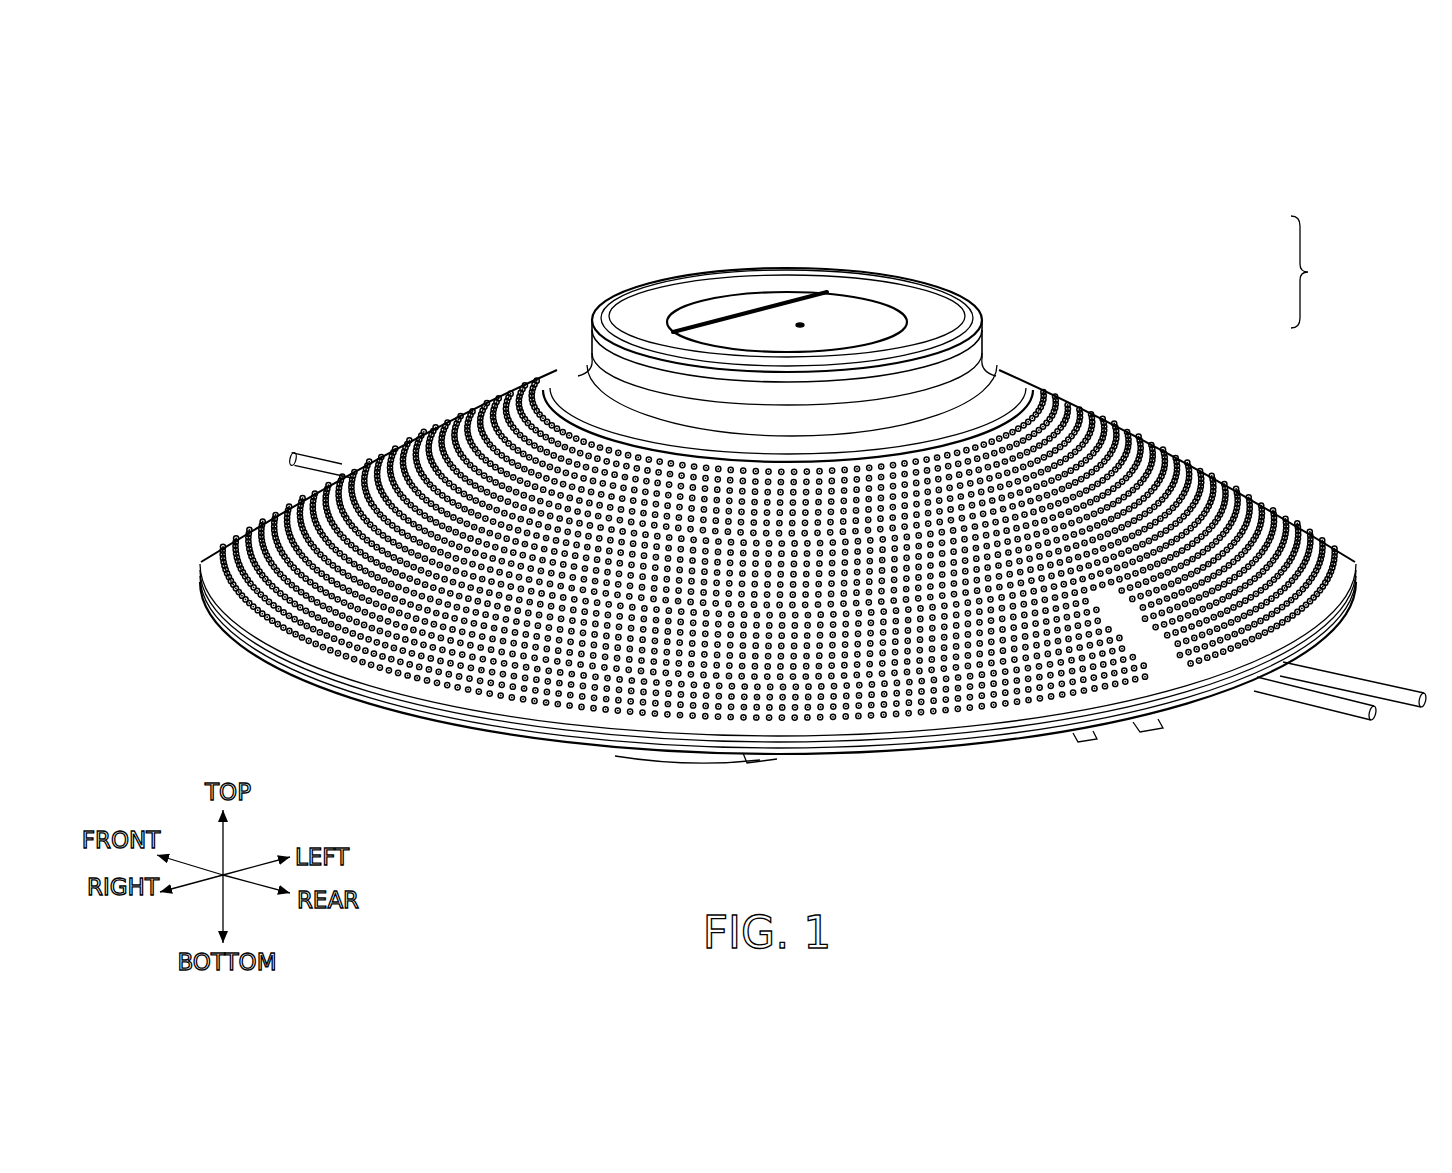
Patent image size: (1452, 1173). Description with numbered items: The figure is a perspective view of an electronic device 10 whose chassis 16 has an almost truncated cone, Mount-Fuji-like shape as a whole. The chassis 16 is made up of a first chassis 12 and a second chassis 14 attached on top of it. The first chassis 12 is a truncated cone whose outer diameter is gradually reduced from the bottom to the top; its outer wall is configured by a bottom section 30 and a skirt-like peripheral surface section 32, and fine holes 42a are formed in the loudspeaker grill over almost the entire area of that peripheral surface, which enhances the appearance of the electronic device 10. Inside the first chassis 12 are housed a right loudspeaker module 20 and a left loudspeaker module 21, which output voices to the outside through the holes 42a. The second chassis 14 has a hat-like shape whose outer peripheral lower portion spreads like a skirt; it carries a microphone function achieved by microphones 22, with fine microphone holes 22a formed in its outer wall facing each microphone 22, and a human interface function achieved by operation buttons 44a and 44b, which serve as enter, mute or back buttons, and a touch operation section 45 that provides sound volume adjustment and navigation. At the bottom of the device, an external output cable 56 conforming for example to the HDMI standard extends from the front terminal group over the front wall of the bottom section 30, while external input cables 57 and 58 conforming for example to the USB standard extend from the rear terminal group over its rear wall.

The electronic device 10 is at (322, 252).
The first chassis 12 is at (1084, 391).
The second chassis 14 is at (950, 283).
The chassis 16 is at (1317, 272).
The loudspeaker module 20 is at (506, 640).
The loudspeaker module 21 is at (1189, 445).
The microphone 22 is at (637, 415).
The microphone hole 22a is at (632, 215).
The bottom section 30 is at (668, 766).
The peripheral surface section 32 is at (418, 430).
The holes 42a is at (1245, 492).
The operation button 44a is at (707, 310).
The operation button 44b is at (823, 316).
The touch operation section 45 is at (582, 376).
The external output cable 56 is at (317, 458).
The external input cable 57 is at (1392, 688).
The external input cable 58 is at (1327, 704).